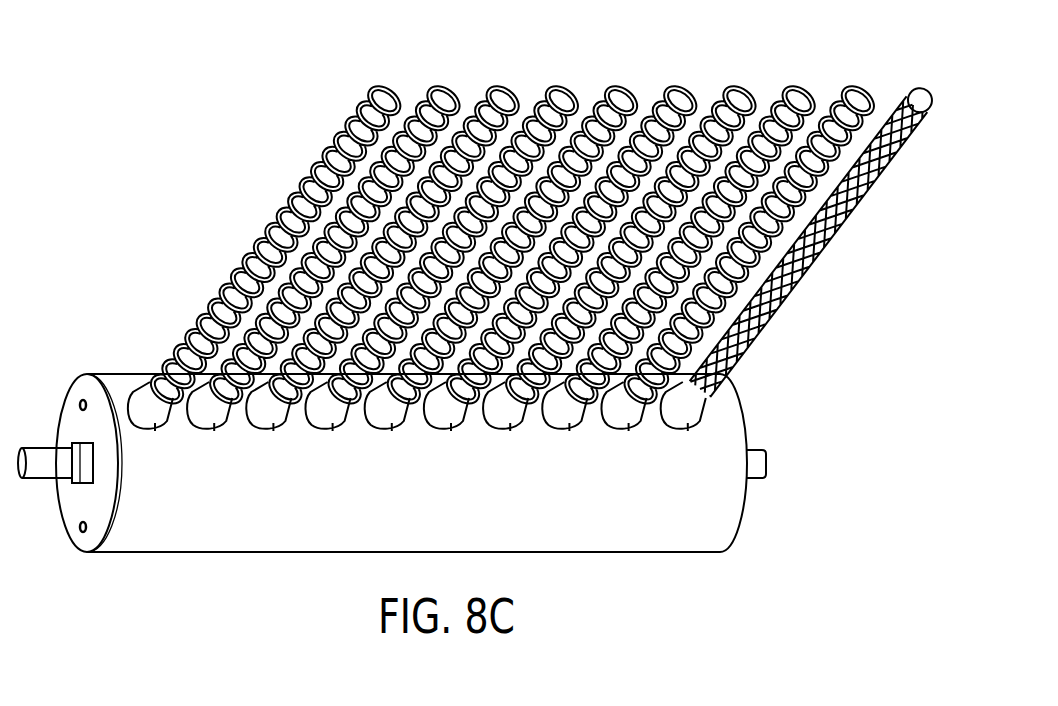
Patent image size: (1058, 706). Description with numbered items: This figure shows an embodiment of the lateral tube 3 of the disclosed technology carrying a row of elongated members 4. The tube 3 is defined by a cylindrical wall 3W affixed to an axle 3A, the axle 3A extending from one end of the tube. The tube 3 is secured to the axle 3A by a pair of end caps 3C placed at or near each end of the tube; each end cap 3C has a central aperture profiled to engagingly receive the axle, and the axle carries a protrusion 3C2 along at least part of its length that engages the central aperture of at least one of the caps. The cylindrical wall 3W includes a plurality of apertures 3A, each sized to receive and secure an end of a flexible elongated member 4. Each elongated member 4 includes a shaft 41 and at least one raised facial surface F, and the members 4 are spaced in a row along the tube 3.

The lateral tube 3 is at (411, 471).
The axle 3A is at (45, 465).
The end cap 3C is at (68, 510).
The protrusion 3C2 is at (87, 445).
The cylindrical wall 3W is at (135, 530).
The elongated member 4 is at (541, 204).
The shaft 41 is at (541, 218).
The raised facial surface F is at (813, 128).